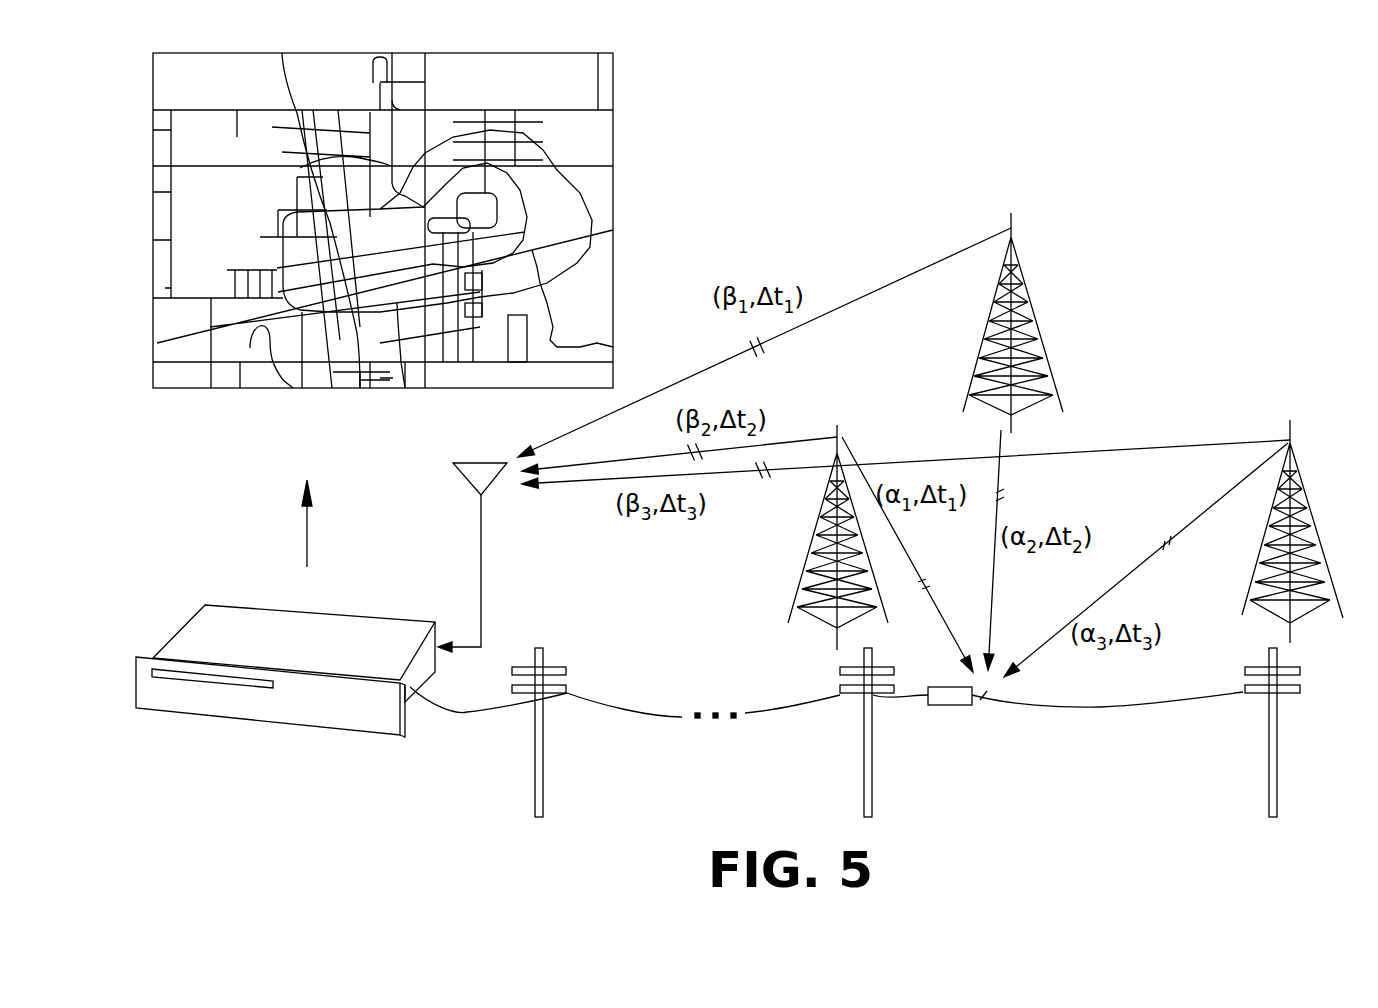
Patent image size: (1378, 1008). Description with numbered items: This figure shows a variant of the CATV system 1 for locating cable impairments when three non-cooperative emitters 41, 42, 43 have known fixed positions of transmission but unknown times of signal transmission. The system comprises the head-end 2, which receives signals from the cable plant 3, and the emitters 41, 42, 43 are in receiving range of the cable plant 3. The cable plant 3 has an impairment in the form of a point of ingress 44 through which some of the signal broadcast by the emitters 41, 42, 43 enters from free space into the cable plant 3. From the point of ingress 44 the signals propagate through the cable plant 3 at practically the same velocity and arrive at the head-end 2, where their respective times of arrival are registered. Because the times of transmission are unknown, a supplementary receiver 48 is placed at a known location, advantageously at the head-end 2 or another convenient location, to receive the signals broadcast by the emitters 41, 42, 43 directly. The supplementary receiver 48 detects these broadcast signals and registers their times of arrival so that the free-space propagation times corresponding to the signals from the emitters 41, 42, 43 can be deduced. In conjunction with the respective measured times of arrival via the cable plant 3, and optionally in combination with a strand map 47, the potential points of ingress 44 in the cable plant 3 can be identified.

The CATV system 1 is at (332, 814).
The head-end 2 is at (283, 607).
The cable plant 3 is at (638, 732).
The non-cooperative emitter 41 is at (788, 620).
The non-cooperative emitter 42 is at (965, 403).
The non-cooperative emitter 43 is at (1242, 612).
The point of ingress 44 is at (950, 707).
The strand map 47 is at (287, 390).
The supplementary receiver 48 is at (480, 555).